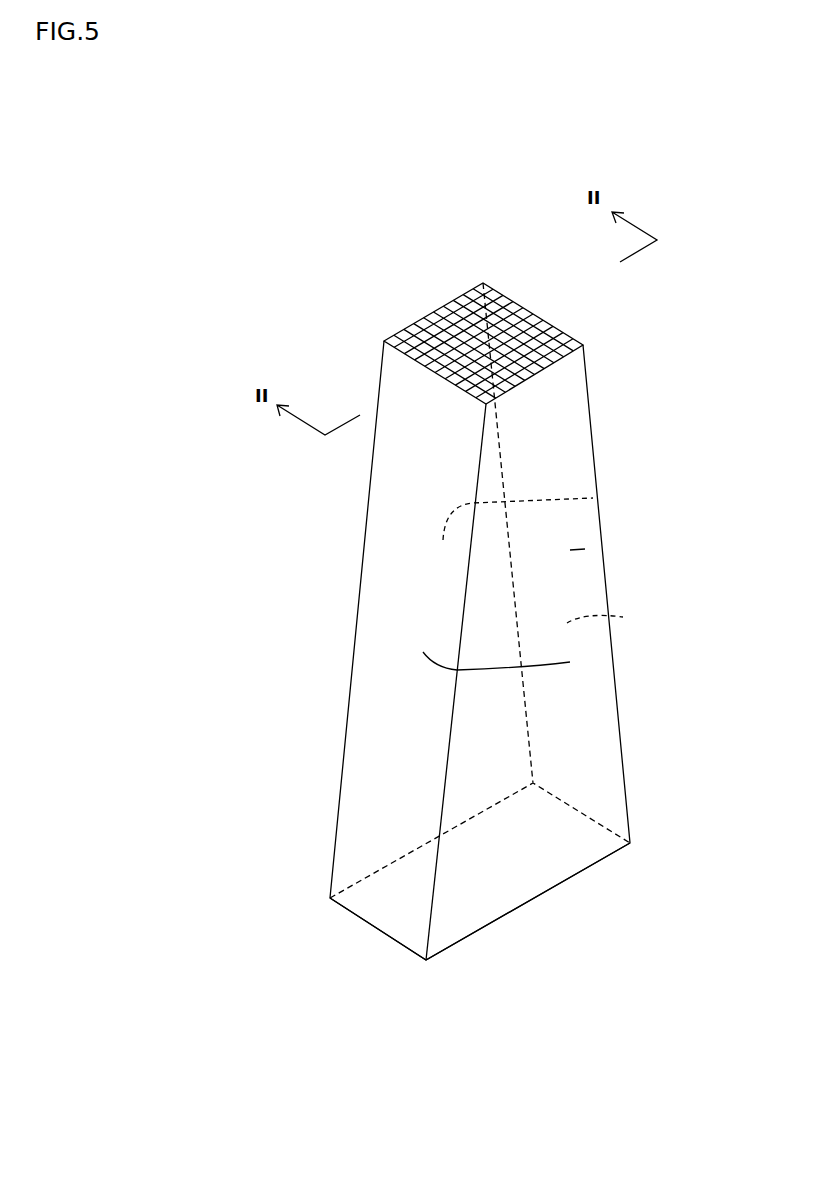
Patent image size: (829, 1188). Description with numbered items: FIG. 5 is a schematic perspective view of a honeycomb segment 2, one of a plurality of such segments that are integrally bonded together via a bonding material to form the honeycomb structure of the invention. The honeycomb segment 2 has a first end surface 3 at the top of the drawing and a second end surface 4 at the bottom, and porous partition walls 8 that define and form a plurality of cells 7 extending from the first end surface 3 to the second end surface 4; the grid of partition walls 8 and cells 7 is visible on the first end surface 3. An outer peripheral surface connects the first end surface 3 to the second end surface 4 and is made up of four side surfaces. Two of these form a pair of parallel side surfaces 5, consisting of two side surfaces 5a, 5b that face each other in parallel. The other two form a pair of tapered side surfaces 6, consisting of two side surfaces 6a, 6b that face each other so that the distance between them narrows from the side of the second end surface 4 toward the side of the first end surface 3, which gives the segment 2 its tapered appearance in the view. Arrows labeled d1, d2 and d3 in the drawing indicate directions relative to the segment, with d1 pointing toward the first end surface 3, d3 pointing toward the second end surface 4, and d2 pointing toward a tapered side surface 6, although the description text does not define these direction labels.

The honeycomb segment 2 is at (347, 625).
The first end surface 3 is at (497, 331).
The second end surface 4 is at (517, 862).
The pair of parallel side surfaces 5 is at (577, 520).
The side surface 5a is at (570, 550).
The side surface 5b is at (593, 498).
The pair of tapered side surfaces 6 is at (585, 637).
The side surface 6a is at (570, 662).
The side surface 6b is at (623, 617).
The cell 7 is at (512, 308).
The porous partition wall 8 is at (540, 322).
The first direction d1 is at (489, 243).
The second direction d2 is at (583, 703).
The third direction d3 is at (480, 897).